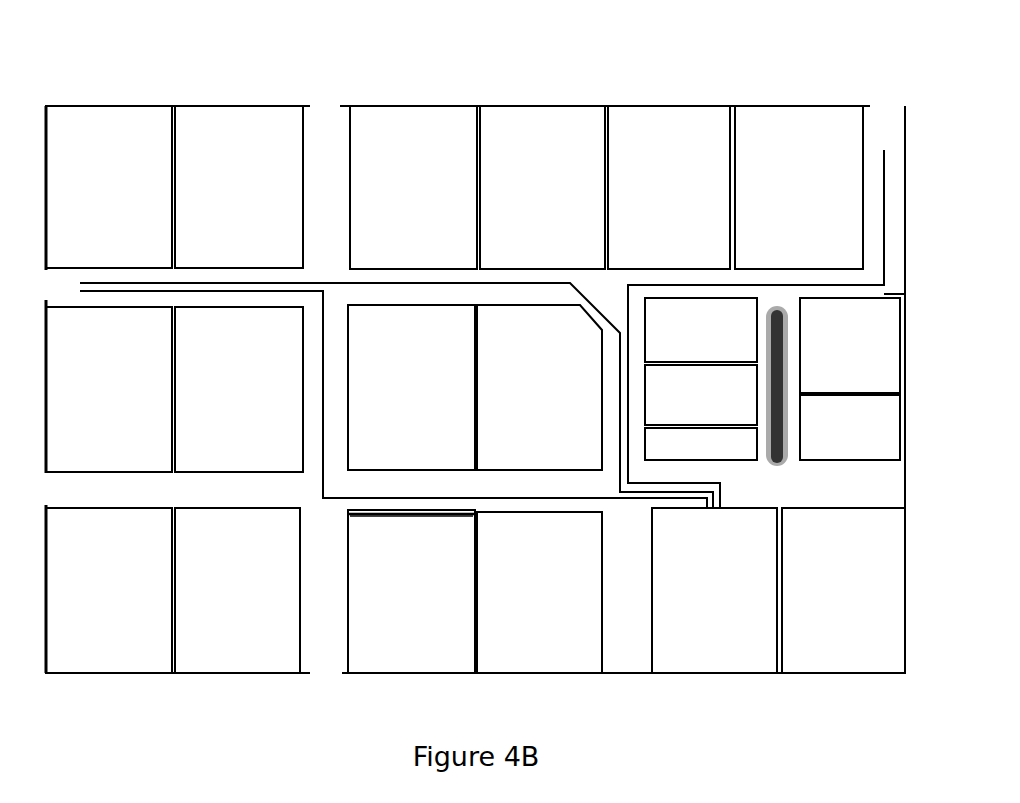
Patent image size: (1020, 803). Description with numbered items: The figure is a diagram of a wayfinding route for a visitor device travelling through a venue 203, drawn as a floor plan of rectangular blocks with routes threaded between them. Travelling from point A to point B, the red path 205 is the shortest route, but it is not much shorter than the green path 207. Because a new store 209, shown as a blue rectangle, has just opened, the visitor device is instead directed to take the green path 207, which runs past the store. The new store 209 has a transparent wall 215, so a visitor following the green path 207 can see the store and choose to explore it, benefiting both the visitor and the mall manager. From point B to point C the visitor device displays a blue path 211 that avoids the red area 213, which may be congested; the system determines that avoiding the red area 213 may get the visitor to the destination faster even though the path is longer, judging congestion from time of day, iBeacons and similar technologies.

The venue 203 is at (142, 78).
The red path 205 is at (314, 282).
The green path 207 is at (320, 468).
The new store 209 is at (413, 645).
The blue path 211 is at (884, 200).
The red area 213 is at (783, 440).
The transparent wall 215 is at (347, 642).